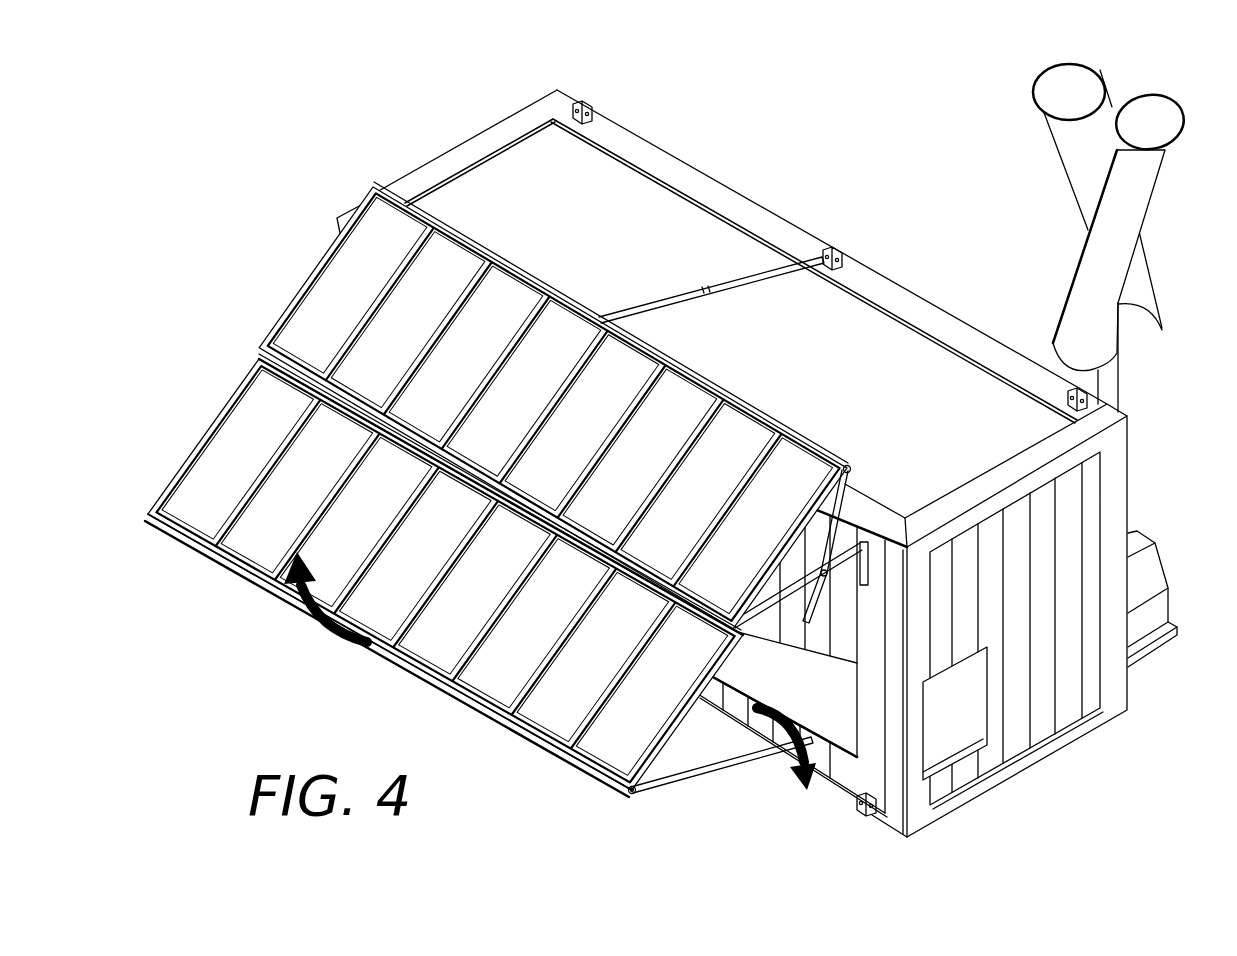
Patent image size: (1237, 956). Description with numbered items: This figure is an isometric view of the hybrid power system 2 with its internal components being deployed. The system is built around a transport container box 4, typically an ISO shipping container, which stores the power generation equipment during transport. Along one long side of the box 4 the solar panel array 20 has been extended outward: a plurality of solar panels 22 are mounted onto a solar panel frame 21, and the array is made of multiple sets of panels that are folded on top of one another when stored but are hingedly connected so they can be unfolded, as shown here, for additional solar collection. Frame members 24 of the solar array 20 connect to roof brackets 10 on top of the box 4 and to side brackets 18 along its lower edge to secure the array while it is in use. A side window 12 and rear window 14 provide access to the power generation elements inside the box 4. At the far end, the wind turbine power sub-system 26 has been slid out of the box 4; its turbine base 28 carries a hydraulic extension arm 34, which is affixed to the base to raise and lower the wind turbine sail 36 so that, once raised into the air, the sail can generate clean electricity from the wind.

The hybrid power system 2 is at (238, 158).
The transport container box 4 is at (657, 147).
The roof brackets 10 is at (596, 110).
The side window 12 is at (785, 678).
The rear window 14 is at (968, 727).
The side brackets 18 is at (856, 805).
The solar panel array 20 is at (238, 319).
The solar panel frame 21 is at (792, 430).
The solar panels 22 is at (364, 297).
The frame members 24 is at (744, 290).
The wind turbine power sub-system 26 is at (1165, 452).
The turbine base 28 is at (1167, 582).
The hydraulic extension arm 34 is at (1118, 387).
The wind turbine sail 36 is at (1060, 158).